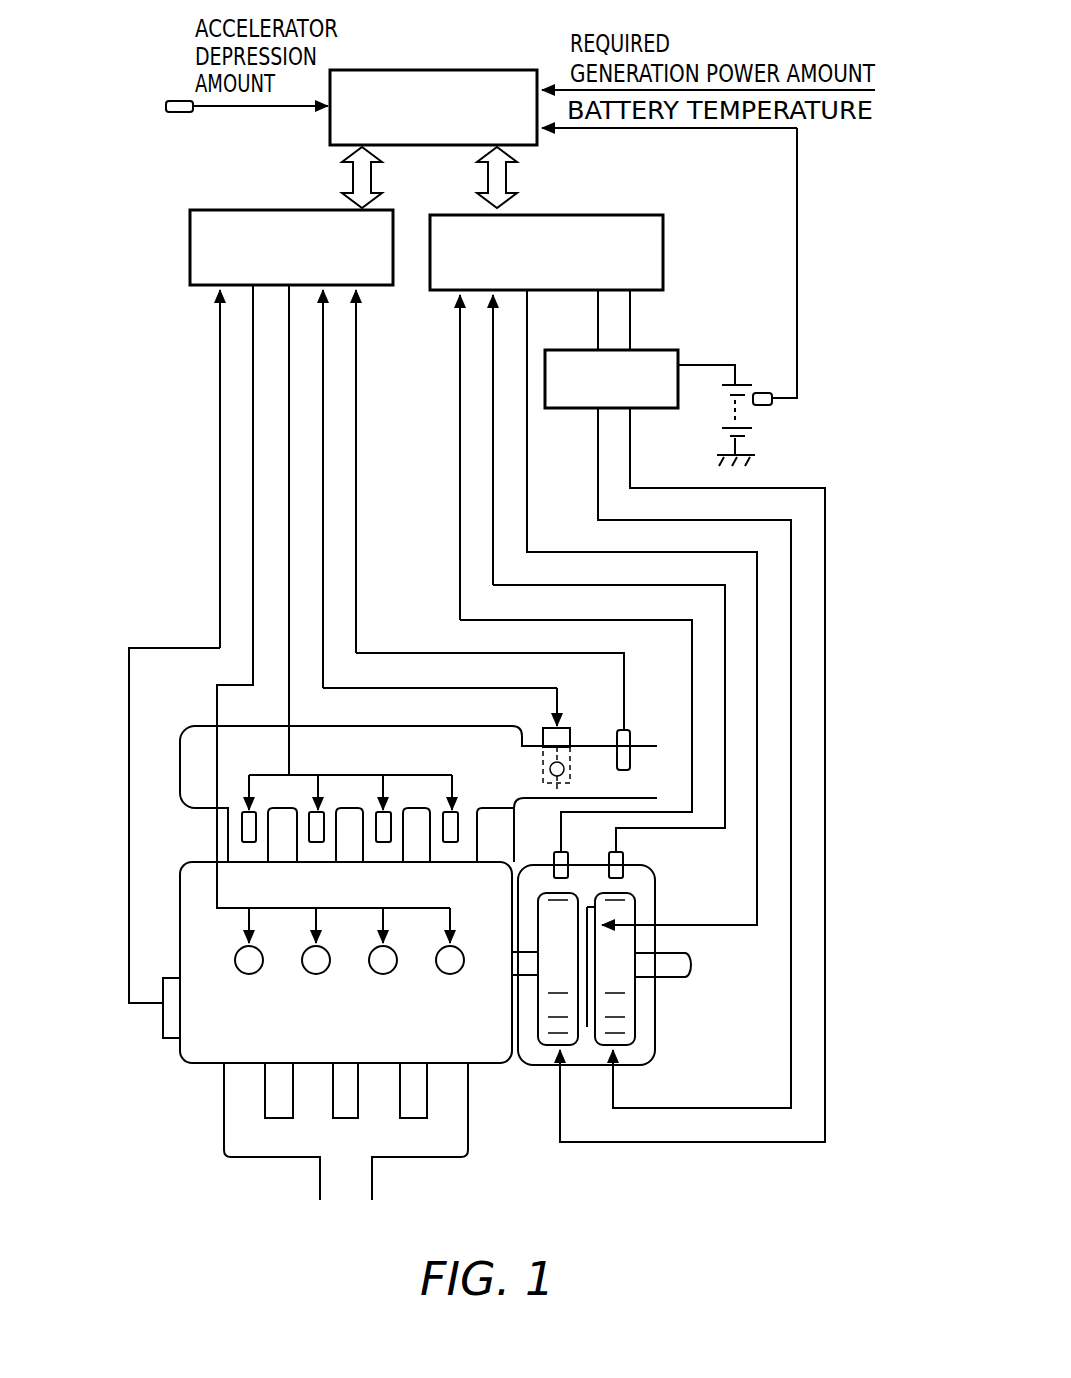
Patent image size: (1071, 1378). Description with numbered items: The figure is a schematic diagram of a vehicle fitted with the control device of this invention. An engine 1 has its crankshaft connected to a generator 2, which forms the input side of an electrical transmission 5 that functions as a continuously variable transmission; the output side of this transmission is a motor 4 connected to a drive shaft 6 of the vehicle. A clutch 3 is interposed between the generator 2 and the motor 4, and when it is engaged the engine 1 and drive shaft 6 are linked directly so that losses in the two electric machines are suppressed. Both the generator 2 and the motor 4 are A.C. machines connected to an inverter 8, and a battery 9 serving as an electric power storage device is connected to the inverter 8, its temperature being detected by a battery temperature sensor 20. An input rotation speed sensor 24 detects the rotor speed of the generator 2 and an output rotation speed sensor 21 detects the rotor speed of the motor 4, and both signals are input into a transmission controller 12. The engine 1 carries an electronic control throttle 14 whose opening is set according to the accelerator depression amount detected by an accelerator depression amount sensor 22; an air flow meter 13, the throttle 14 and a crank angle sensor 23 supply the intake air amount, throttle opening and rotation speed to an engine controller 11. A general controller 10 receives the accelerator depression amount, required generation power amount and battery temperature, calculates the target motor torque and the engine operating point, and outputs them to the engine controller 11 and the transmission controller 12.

The engine 1 is at (197, 1068).
The generator 2 is at (555, 1025).
The clutch 3 is at (598, 907).
The motor 4 is at (625, 1030).
The electrical transmission 5 is at (662, 1042).
The drive shaft 6 is at (670, 967).
The inverter 8 is at (665, 350).
The battery 9 is at (762, 425).
The general controller 10 is at (466, 70).
The engine controller 11 is at (190, 266).
The transmission controller 12 is at (663, 248).
The air flow meter 13 is at (632, 732).
The electronic control throttle 14 is at (560, 733).
The battery temperature sensor 20 is at (763, 393).
The output rotation speed sensor 21 is at (625, 858).
The accelerator depression amount sensor 22 is at (178, 112).
The crank angle sensor 23 is at (162, 1028).
The input rotation speed sensor 24 is at (556, 860).